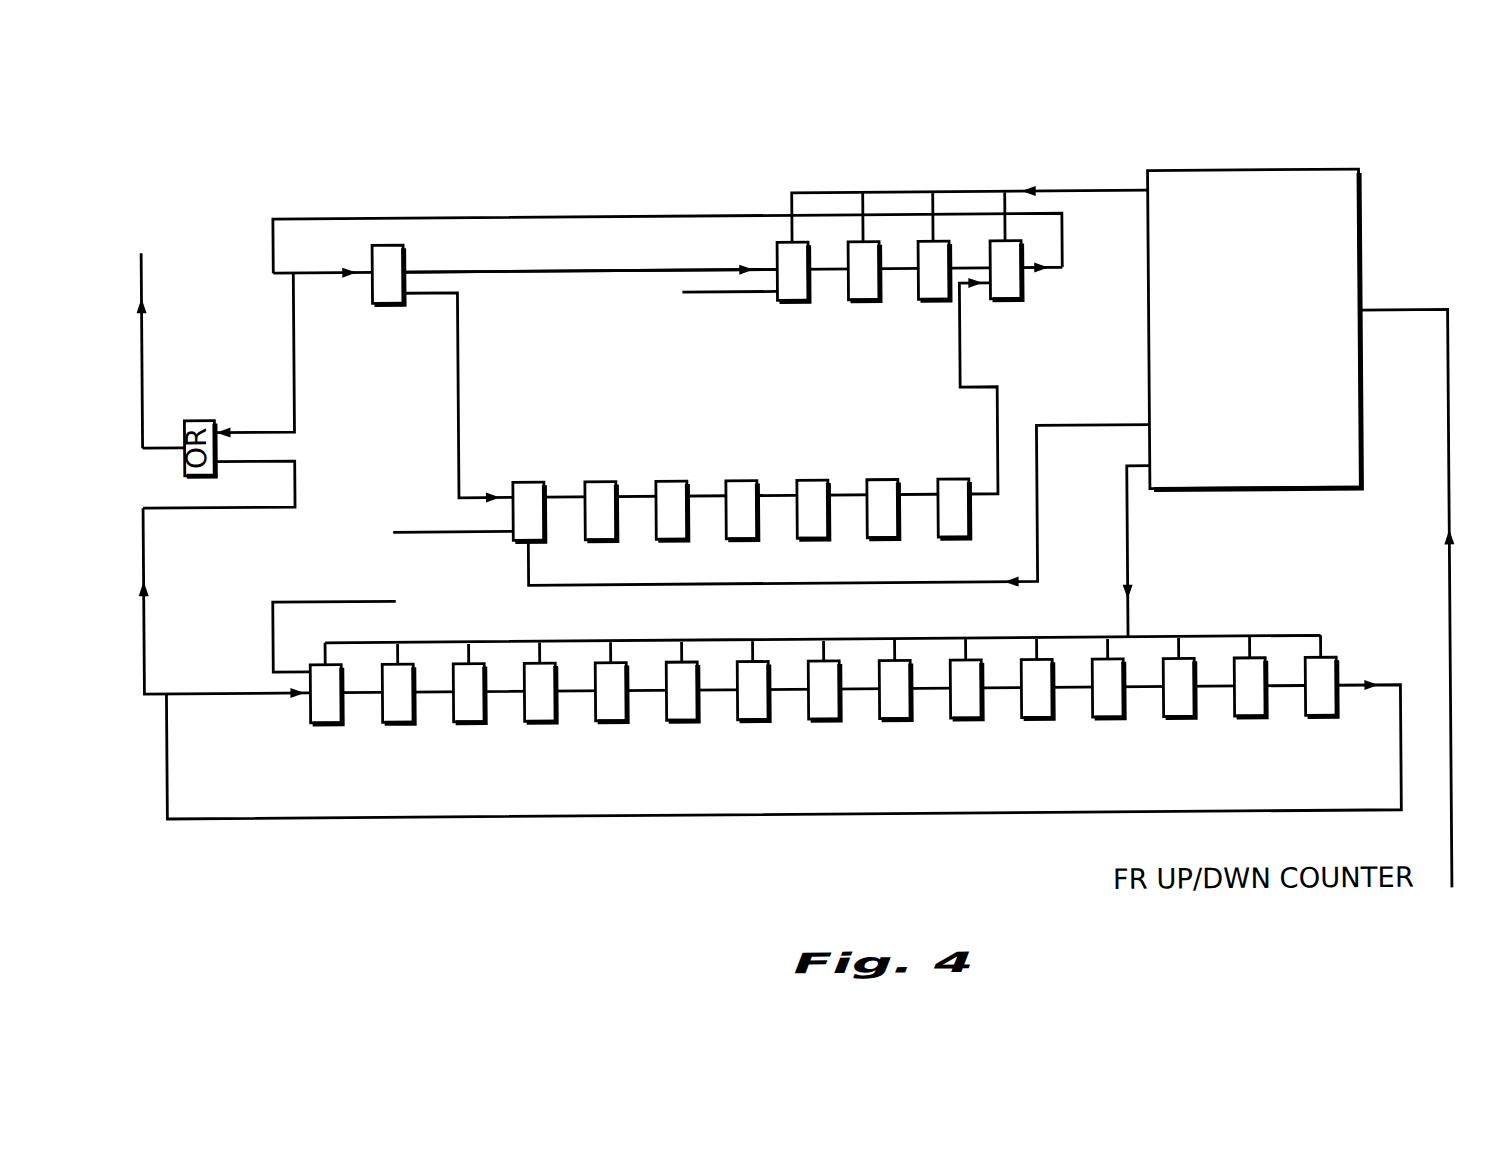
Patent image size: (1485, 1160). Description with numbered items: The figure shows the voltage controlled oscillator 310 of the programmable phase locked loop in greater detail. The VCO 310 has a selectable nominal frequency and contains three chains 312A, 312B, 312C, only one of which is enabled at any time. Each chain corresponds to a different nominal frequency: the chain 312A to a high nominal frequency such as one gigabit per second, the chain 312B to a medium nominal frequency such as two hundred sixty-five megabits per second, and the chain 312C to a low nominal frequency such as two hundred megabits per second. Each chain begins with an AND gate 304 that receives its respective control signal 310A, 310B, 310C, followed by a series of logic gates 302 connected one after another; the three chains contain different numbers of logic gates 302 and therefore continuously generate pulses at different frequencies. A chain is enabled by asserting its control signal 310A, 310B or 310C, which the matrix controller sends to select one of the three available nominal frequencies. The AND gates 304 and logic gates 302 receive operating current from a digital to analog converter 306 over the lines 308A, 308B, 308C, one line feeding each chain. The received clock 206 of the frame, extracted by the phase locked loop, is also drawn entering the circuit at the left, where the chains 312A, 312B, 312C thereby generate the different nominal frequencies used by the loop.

The clock frequency 206 is at (143, 324).
The logic gate 302 is at (389, 301).
The AND gate 304 is at (794, 301).
The digital to analog converter 306 is at (1361, 208).
The line 308A is at (1122, 193).
The line 308B is at (1075, 428).
The line 308C is at (1127, 620).
The voltage controlled oscillator 310 is at (863, 846).
The control signal 310A is at (706, 292).
The control signal 310B is at (483, 530).
The control signal 310C is at (272, 626).
The chain 312A is at (750, 250).
The chain 312B is at (436, 483).
The chain 312C is at (282, 708).